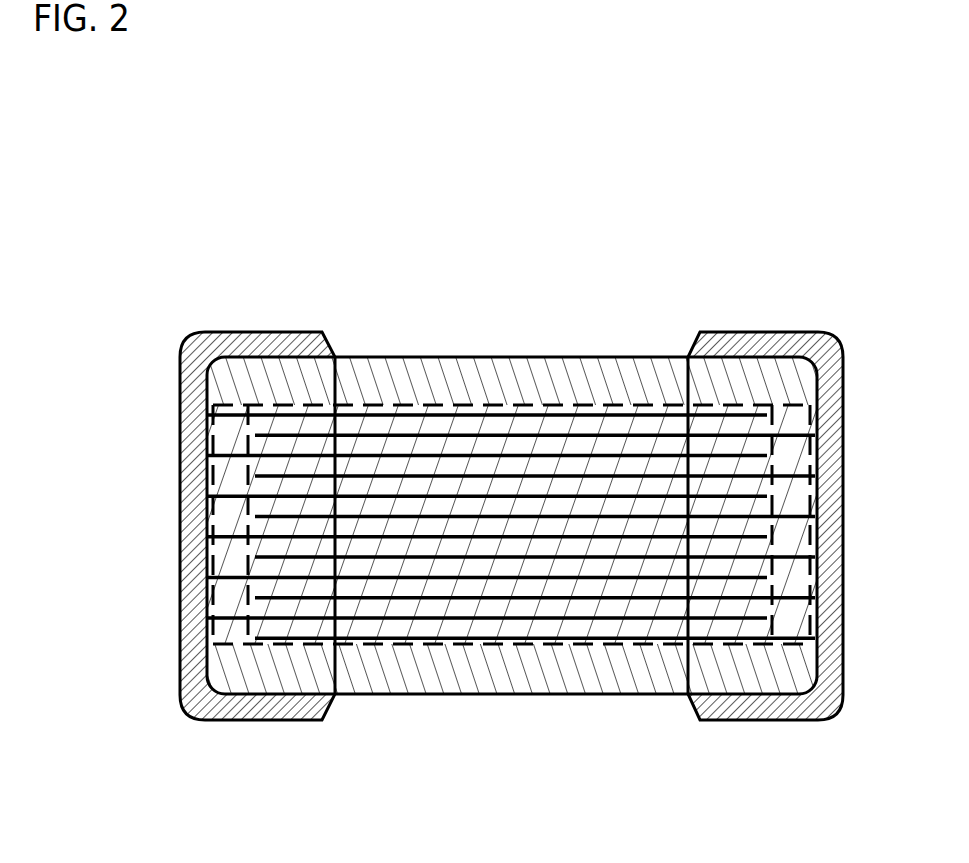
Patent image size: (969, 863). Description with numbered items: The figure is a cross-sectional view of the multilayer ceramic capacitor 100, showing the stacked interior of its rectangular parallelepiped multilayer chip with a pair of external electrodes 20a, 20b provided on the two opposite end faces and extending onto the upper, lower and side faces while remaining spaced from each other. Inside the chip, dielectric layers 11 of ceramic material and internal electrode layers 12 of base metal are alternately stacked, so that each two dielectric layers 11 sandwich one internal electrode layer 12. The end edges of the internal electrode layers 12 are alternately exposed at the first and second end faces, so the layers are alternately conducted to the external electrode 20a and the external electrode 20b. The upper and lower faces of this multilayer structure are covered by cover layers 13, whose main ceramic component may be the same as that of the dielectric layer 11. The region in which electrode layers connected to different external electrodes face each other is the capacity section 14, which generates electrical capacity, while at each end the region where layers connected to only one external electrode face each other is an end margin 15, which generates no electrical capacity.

The multilayer ceramic capacitor 100 is at (738, 275).
The external electrode 20a is at (205, 331).
The external electrode 20b is at (805, 331).
The dielectric layer 11 is at (622, 605).
The internal electrode layer 12 is at (453, 577).
The cover layer 13 is at (404, 372).
The capacity section 14 is at (536, 402).
The end margin 15 is at (233, 403).